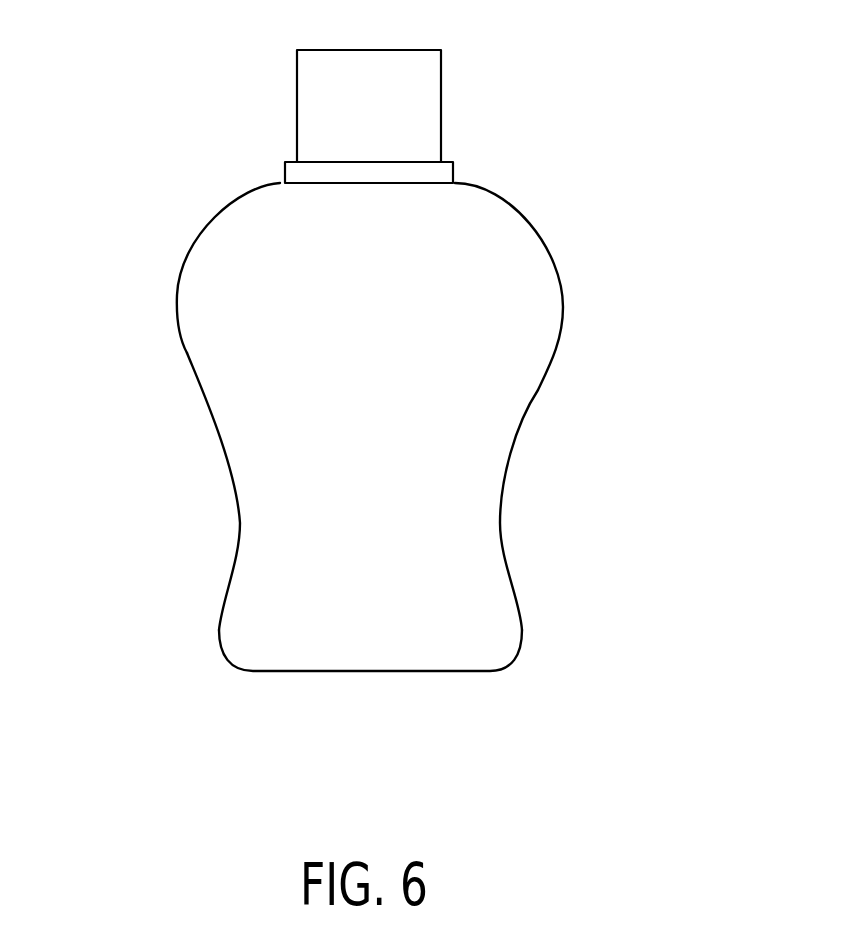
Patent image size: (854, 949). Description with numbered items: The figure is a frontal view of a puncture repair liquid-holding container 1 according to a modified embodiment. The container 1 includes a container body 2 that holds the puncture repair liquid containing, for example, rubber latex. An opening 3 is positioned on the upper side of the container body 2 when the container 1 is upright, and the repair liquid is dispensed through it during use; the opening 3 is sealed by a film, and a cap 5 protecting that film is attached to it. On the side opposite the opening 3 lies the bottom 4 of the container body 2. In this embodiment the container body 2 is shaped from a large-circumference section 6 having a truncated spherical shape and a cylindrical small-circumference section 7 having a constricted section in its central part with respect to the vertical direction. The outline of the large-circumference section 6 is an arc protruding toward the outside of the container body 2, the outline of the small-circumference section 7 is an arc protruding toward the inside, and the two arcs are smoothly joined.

The puncture repair liquid-holding container 1 is at (603, 203).
The container body 2 is at (585, 397).
The opening 3 is at (441, 162).
The bottom 4 is at (378, 672).
The cap 5 is at (297, 82).
The large-circumference section 6 is at (177, 303).
The small-circumference section 7 is at (240, 527).